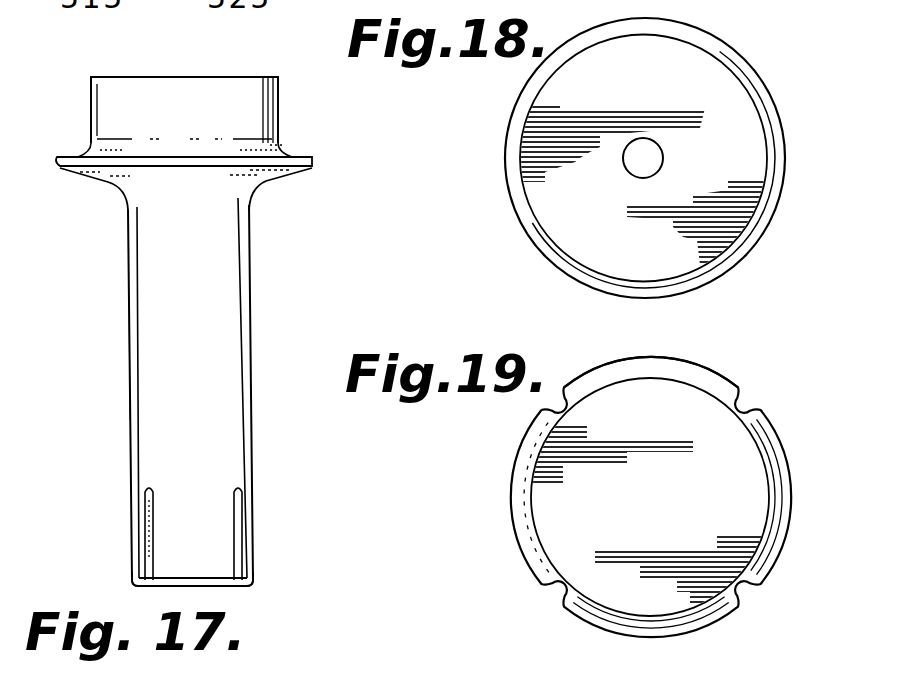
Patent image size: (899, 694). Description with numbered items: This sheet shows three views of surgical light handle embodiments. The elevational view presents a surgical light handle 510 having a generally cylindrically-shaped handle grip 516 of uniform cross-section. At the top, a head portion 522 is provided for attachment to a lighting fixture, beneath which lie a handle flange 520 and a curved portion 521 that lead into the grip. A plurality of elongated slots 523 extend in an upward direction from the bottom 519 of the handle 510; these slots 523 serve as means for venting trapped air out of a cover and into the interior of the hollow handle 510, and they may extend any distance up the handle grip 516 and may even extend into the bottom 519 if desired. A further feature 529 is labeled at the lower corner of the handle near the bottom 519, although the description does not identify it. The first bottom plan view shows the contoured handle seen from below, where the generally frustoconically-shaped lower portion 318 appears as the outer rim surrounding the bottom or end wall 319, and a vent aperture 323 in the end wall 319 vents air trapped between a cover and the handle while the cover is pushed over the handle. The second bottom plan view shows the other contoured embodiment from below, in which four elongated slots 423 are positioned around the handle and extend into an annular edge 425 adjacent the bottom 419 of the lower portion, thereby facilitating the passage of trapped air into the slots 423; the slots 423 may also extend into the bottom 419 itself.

In FIG. 17, the surgical light handle 510 is at (262, 319).
In FIG. 17, the handle grip 516 is at (150, 352).
In FIG. 17, the bottom 519 is at (222, 587).
In FIG. 17, the handle flange 520 is at (66, 164).
In FIG. 17, the curved portion 521 is at (274, 181).
In FIG. 17, the head portion 522 is at (266, 116).
In FIG. 17, the elongated slots 523 is at (230, 515).
In FIG. 17, the bottom corner 529 is at (165, 585).
In FIG. 18, the lower portion 318 is at (757, 72).
In FIG. 18, the end wall 319 is at (733, 122).
In FIG. 18, the vent aperture 323 is at (635, 172).
In FIG. 19, the bottom 419 is at (740, 448).
In FIG. 19, the elongated slots 423 is at (746, 400).
In FIG. 19, the annular edge 425 is at (640, 368).